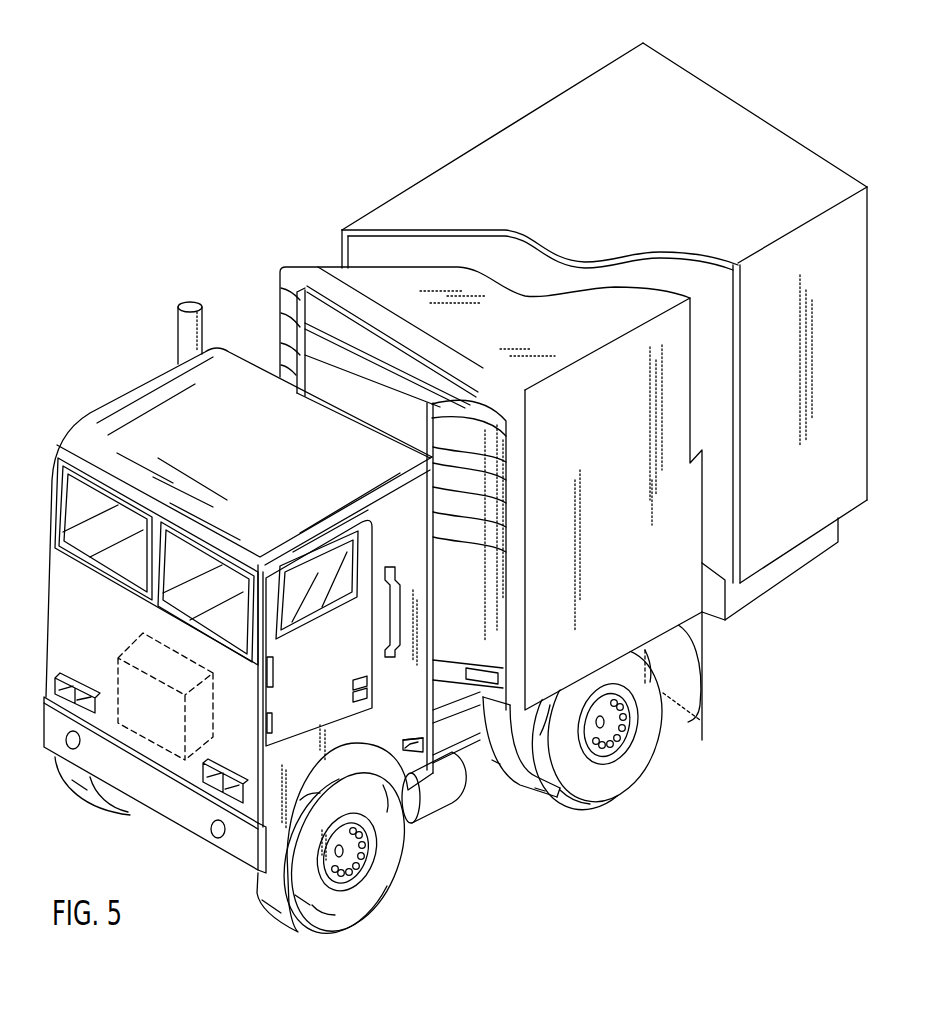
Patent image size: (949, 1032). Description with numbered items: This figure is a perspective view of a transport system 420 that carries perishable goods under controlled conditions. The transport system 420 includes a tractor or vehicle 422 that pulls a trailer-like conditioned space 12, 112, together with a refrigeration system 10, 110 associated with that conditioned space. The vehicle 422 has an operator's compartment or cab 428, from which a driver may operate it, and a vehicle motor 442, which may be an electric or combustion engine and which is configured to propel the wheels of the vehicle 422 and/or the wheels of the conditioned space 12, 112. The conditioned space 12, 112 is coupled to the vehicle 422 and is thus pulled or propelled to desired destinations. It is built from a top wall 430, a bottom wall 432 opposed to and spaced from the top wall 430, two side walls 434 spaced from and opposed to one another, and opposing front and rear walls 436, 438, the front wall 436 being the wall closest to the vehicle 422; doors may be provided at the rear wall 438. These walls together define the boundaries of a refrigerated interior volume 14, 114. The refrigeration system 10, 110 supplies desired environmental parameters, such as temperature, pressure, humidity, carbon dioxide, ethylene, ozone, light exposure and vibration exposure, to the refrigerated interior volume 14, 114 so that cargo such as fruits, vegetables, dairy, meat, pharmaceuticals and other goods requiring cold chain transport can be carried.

The transport system 420 is at (137, 230).
The vehicle 422 is at (107, 422).
The cab 428 is at (345, 532).
The vehicle motor 442 is at (180, 760).
The refrigeration system 10 is at (454, 484).
The aerodynamic device 110 is at (308, 283).
The conditioned space 12 is at (636, 379).
The conditioned space 112 is at (423, 172).
The refrigerated interior volume 14 is at (540, 229).
The refrigerated interior volume 114 is at (650, 277).
The top wall 430 is at (578, 100).
The rear wall 438 is at (815, 155).
The side walls 434 is at (852, 300).
The bottom wall 432 is at (853, 507).
The front wall 436 is at (483, 370).